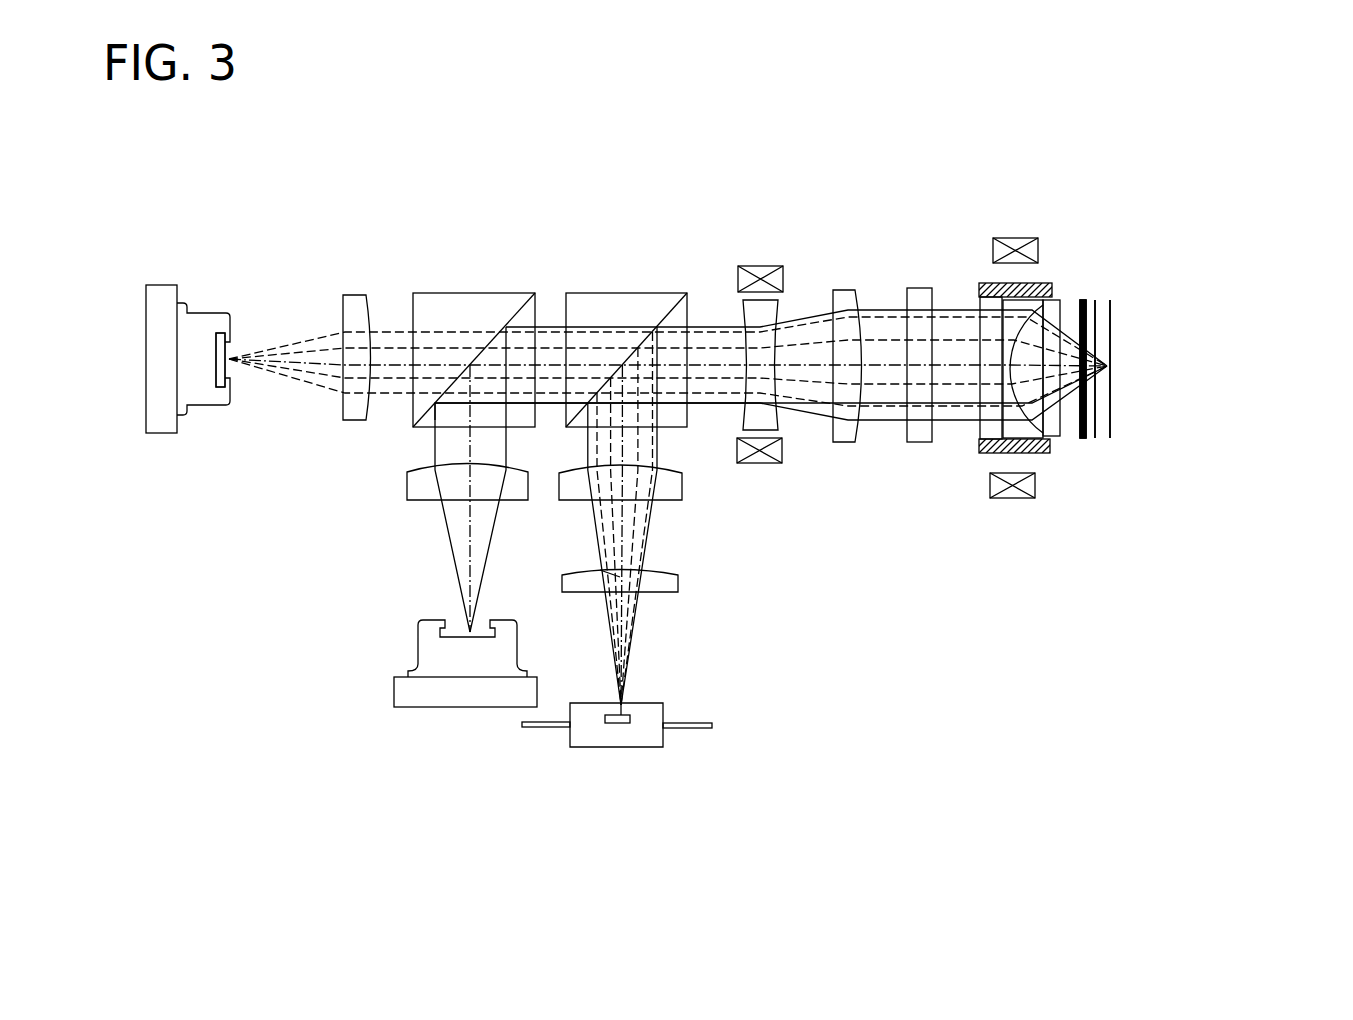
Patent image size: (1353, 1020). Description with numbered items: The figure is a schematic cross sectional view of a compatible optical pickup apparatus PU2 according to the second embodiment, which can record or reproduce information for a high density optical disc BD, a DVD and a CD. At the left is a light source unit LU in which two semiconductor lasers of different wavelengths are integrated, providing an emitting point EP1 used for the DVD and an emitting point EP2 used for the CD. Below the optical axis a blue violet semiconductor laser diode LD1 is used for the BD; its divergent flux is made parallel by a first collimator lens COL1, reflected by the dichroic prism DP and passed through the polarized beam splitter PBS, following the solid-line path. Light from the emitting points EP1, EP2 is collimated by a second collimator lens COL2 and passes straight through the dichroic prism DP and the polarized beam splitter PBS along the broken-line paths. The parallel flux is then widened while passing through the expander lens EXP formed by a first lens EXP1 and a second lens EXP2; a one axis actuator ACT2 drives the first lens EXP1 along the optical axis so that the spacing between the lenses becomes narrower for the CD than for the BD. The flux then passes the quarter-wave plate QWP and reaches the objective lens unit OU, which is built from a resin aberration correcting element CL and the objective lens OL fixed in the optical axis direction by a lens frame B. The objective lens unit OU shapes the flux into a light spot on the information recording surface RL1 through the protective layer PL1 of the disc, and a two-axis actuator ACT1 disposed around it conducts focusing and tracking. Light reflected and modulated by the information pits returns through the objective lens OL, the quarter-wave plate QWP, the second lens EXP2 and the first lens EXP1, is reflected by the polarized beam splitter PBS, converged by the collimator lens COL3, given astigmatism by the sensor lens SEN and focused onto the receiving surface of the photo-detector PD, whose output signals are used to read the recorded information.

The optical pickup apparatus PU2 is at (669, 162).
The light source unit LU is at (152, 327).
The emitting point EP1 is at (228, 357).
The emitting point EP2 is at (226, 360).
The second collimator lens COL2 is at (353, 413).
The dichroic prism DP is at (463, 293).
The polarized beam splitter PBS is at (615, 293).
The first collimator lens COL1 is at (417, 492).
The blue violet semiconductor laser diode LD1 is at (437, 693).
The collimator lens COL3 is at (682, 489).
The sensor lens SEN is at (678, 582).
The photo-detector PD is at (652, 705).
The one axis actuator ACT2 is at (762, 266).
The expander lens EXP is at (912, 528).
The first lens EXP1 is at (781, 424).
The second lens EXP2 is at (840, 440).
The λ/4 plate QWP is at (922, 288).
The lens frame B is at (988, 282).
The two-axis actuator ACT1 is at (1012, 238).
The objective lens unit OU is at (1077, 543).
The resin aberration correcting element CL is at (987, 453).
The objective lens OL is at (1055, 435).
The protective layer PL1 is at (1103, 307).
The information recording surface RL1 is at (1112, 326).
The high density optical disc BD is at (1330, 340).
The element DVD is at (1083, 369).
The element CD is at (1083, 369).